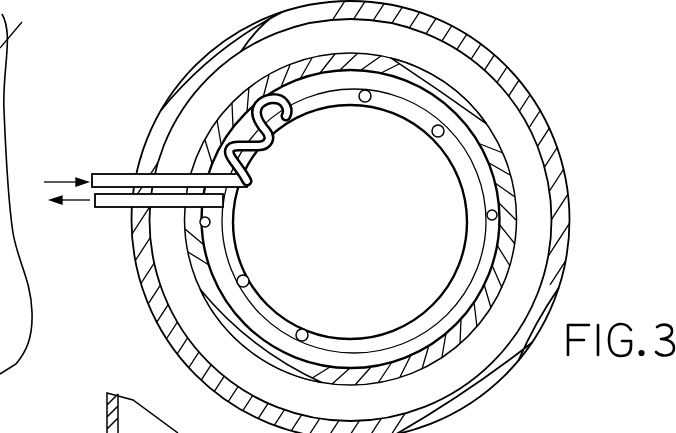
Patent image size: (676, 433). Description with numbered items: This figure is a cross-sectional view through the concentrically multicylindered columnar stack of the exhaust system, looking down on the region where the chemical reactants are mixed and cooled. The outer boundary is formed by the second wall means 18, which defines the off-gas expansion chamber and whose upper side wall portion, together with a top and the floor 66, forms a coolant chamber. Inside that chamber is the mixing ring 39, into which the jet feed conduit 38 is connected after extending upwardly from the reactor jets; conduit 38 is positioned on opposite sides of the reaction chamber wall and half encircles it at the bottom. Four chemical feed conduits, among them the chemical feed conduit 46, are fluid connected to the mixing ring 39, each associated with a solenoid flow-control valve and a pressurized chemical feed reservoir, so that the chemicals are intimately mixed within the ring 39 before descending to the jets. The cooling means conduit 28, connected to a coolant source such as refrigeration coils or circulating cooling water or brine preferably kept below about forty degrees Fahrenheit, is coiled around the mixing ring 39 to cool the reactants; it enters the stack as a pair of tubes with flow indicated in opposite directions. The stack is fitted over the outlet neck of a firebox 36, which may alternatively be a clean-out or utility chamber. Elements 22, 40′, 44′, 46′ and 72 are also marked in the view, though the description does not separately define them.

The second wall means 18 is at (470, 96).
The wall 22 is at (16, 194).
The cooling means conduit 28 is at (124, 174).
The firebox 36 is at (20, 22).
The jet feed conduit 38 is at (205, 228).
The mixing ring 39 is at (397, 112).
The ball 40′ is at (249, 278).
The ball 44′ is at (366, 103).
The chemical feed conduit 46 is at (314, 310).
The ball 46′ is at (432, 139).
The floor 66 is at (370, 250).
The support 72 is at (142, 413).